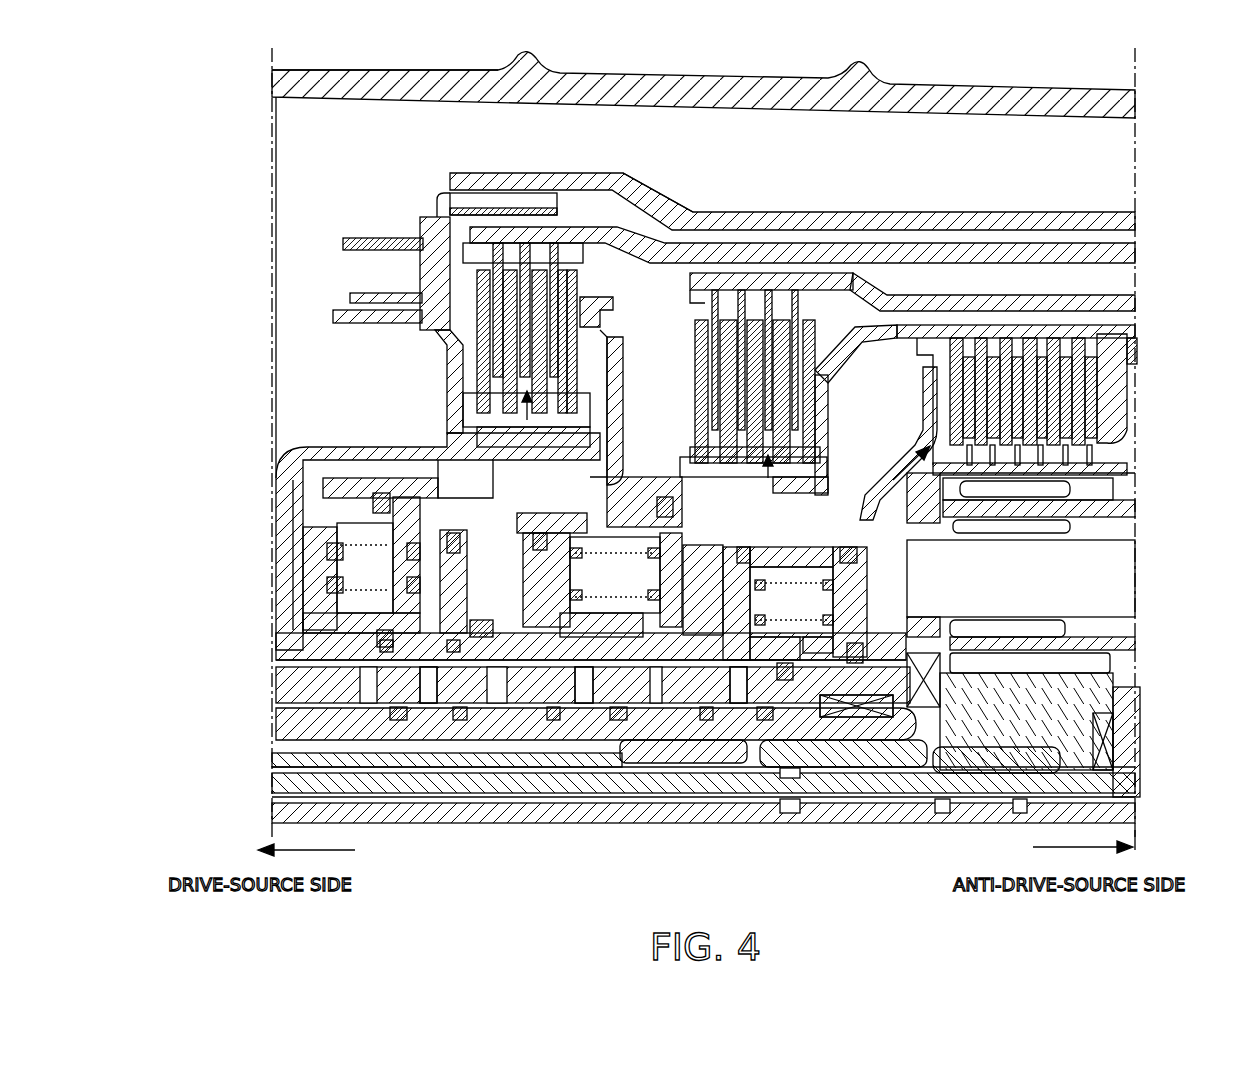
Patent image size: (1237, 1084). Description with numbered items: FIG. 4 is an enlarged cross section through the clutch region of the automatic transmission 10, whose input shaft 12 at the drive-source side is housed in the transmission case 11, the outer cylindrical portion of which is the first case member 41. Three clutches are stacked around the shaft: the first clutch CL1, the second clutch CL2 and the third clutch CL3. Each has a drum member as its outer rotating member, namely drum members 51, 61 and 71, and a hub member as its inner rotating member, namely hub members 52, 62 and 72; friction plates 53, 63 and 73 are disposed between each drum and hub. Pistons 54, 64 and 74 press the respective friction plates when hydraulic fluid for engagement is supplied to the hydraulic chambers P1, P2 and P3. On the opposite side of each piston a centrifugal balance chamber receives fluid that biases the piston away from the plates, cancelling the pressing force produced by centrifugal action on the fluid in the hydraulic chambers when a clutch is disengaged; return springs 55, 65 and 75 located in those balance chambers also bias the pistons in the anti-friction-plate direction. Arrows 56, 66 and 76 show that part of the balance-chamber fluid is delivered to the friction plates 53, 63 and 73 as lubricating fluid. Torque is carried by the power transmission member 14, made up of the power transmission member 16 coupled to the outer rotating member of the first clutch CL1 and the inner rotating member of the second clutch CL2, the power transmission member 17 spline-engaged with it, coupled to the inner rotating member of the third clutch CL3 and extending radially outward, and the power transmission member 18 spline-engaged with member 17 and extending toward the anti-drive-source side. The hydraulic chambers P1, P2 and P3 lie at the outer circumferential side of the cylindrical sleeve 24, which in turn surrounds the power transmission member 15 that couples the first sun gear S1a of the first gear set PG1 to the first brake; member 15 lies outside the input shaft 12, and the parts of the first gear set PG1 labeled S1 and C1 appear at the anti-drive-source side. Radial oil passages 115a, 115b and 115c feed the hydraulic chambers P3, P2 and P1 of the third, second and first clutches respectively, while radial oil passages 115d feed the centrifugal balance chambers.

The automatic transmission 10 is at (703, 79).
The transmission case 11 is at (726, 82).
The first case member 41 is at (328, 70).
The power transmission member 18 is at (988, 222).
The drum member 71 is at (572, 237).
The friction plates 73 is at (588, 260).
The drum member 61 is at (757, 275).
The friction plates 63 is at (688, 300).
The piston 64 is at (684, 325).
The second clutch CL2 is at (822, 303).
The third clutch CL3 is at (456, 262).
The first clutch CL1 is at (1147, 412).
The piston 74 is at (596, 293).
The hub member 72 is at (453, 425).
The arrow 76 is at (347, 440).
The return spring 75 is at (448, 517).
The arrow 66 is at (641, 410).
The return spring 65 is at (593, 513).
The hub member 62 is at (712, 468).
The drum member 51 is at (1136, 328).
The hub member 52 is at (1125, 472).
The friction plates 53 is at (1108, 452).
The piston 54 is at (908, 428).
The return spring 55 is at (807, 520).
The arrow 56 is at (912, 548).
The first gear set PG1 is at (1067, 667).
The carrier C1 is at (1136, 593).
The sun gear S1 is at (997, 725).
The first sun gear S1a is at (1000, 775).
The power transmission member 14 is at (1140, 668).
The power transmission member 17 is at (272, 652).
The sleeve 24 is at (262, 765).
The input shaft 12 is at (268, 812).
The power transmission member 15 is at (887, 773).
The power transmission member 16 is at (880, 776).
The hydraulic chamber P1 is at (713, 708).
The hydraulic chamber P2 is at (548, 705).
The hydraulic chamber P3 is at (427, 645).
The radial oil passage 115a is at (432, 652).
The radial oil passage 115b is at (613, 682).
The radial oil passage 115c is at (747, 675).
The radial oil passage 115d is at (823, 708).